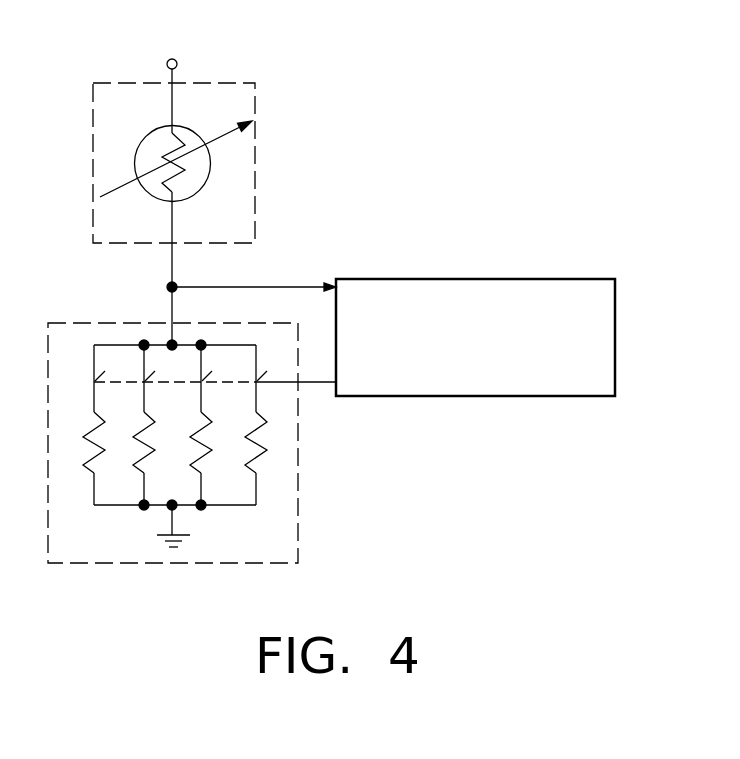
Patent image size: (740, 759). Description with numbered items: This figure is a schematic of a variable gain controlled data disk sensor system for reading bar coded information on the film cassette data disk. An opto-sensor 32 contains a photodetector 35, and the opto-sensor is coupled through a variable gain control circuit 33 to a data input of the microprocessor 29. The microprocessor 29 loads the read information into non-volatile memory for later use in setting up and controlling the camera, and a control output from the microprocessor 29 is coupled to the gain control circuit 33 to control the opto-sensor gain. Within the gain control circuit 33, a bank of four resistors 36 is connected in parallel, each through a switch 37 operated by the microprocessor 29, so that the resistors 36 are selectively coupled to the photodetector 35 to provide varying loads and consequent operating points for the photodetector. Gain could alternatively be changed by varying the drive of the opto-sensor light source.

The microprocessor 29 is at (615, 338).
The opto-sensor 32 is at (255, 148).
The variable gain control circuit 33 is at (298, 445).
The photodetector 35 is at (153, 130).
The resistors 36 is at (137, 462).
The switches 37 is at (97, 373).